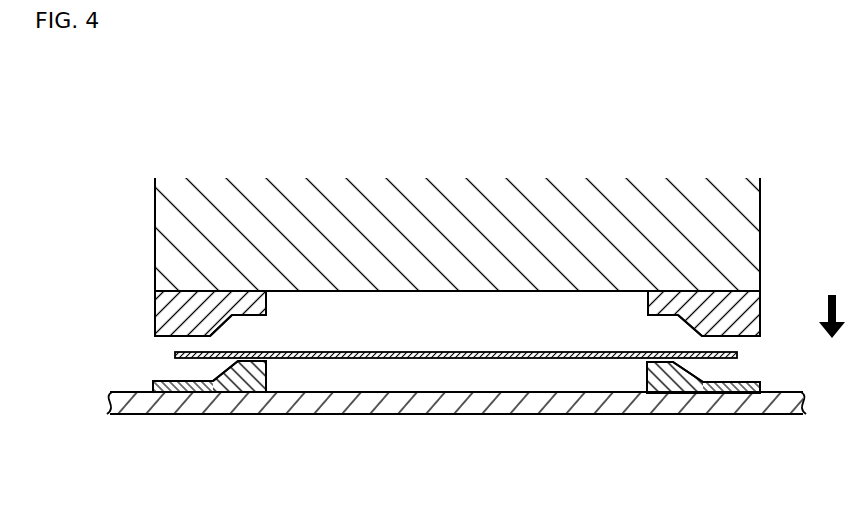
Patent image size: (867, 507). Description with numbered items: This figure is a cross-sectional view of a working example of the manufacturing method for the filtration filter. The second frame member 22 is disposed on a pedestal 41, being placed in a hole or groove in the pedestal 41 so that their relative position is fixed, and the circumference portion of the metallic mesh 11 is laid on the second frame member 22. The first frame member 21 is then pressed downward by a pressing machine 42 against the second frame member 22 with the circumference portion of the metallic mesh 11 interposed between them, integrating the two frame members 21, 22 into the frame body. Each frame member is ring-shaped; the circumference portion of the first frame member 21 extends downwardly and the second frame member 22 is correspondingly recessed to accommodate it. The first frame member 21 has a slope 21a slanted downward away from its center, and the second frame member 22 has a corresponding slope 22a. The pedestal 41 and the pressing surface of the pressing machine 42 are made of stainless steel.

The metallic mesh 11 is at (425, 351).
The first frame member 21 is at (162, 310).
The slope 21a is at (223, 325).
The second frame member 22 is at (152, 387).
The slope 22a is at (227, 373).
The pedestal 41 is at (138, 403).
The pressing machine 42 is at (174, 228).